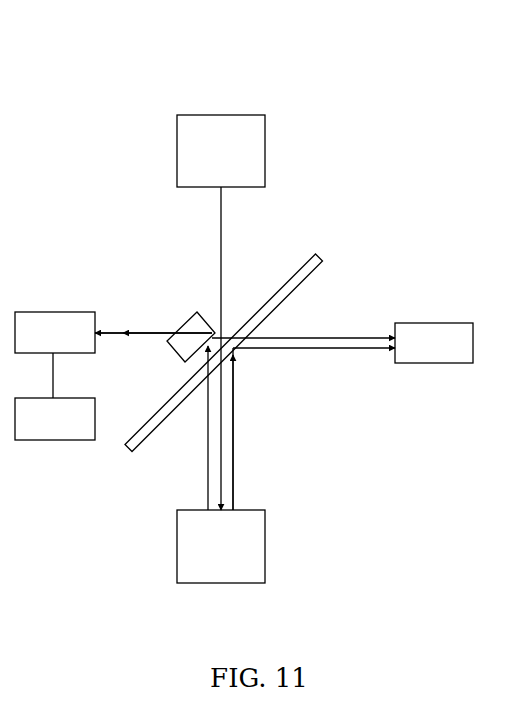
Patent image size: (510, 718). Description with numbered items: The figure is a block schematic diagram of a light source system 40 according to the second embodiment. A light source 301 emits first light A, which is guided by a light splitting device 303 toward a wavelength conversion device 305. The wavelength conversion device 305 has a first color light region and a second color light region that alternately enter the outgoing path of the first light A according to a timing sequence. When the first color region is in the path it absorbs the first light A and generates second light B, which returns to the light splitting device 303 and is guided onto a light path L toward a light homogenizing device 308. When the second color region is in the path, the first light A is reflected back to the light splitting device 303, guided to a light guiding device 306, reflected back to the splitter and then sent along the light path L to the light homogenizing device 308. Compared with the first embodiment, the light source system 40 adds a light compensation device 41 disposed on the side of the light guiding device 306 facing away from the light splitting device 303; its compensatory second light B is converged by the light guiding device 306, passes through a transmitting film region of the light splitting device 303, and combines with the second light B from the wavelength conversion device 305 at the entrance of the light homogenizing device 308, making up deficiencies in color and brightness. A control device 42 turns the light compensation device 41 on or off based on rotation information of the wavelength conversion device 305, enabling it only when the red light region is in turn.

The light source system 40 is at (219, 40).
The light source 301 is at (247, 125).
The light splitting device 303 is at (306, 262).
The wavelength conversion device 305 is at (250, 523).
The light guiding device 306 is at (193, 312).
The light homogenizing device 308 is at (428, 352).
The light compensation device 41 is at (42, 322).
The control device 42 is at (63, 410).
The first light A is at (283, 338).
The second light B is at (143, 333).
The light path L is at (336, 324).